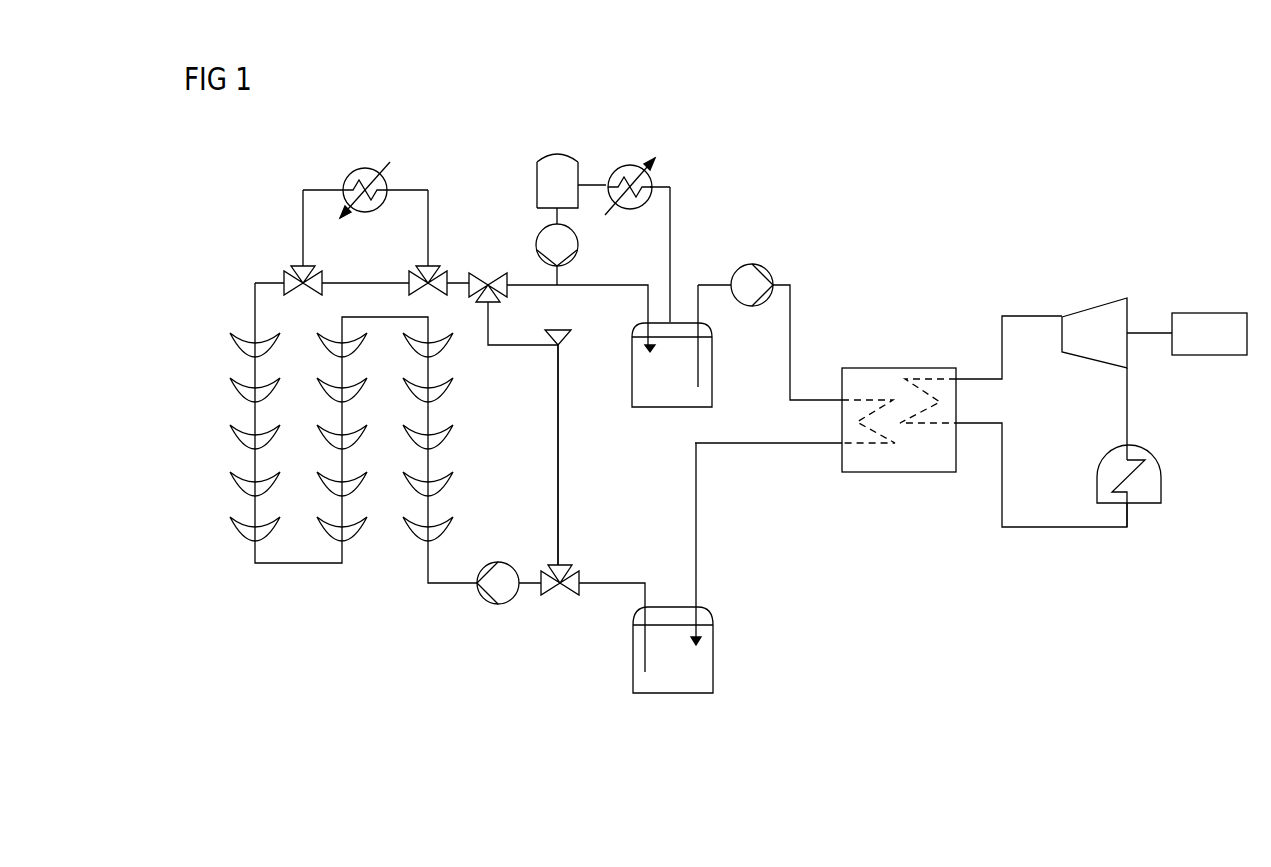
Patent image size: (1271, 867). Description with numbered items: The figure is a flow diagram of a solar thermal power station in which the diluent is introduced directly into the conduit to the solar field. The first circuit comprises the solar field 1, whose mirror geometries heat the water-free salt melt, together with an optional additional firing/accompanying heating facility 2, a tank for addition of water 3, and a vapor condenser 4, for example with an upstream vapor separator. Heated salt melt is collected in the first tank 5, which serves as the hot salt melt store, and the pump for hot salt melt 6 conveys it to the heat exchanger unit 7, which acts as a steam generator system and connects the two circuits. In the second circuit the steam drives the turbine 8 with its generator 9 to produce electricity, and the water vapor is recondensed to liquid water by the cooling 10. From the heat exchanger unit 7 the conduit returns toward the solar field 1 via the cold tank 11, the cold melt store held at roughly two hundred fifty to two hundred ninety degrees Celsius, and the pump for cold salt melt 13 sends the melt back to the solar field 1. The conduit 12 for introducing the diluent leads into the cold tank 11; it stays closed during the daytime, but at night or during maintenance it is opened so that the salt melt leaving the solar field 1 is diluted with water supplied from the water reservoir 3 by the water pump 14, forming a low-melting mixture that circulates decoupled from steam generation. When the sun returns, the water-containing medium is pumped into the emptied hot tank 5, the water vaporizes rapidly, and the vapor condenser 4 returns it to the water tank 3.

The solar field 1 is at (305, 408).
The additional firing/accompanying heating facility 2 is at (347, 180).
The tank for addition of water 3 is at (537, 174).
The vapor condenser 4 is at (664, 171).
The first tank 5 is at (651, 409).
The pump for hot salt melt 6 is at (746, 264).
The heat exchanger unit 7 is at (879, 368).
The turbine 8 is at (1093, 304).
The generator 9 is at (1207, 313).
The cooling 10 is at (1162, 488).
The cold tank 11 is at (713, 665).
The conduit 12 is at (560, 488).
The pump for cold salt melt 13 is at (500, 606).
The water pump 14 is at (524, 242).